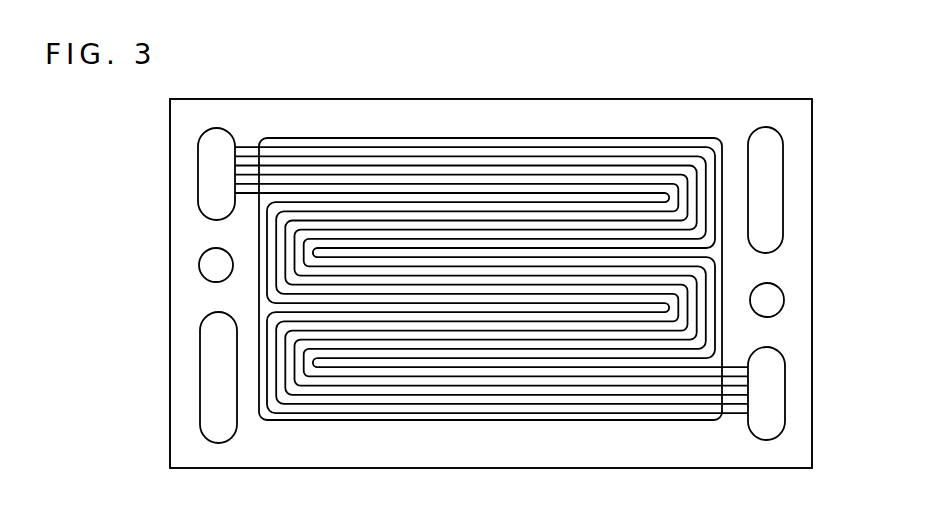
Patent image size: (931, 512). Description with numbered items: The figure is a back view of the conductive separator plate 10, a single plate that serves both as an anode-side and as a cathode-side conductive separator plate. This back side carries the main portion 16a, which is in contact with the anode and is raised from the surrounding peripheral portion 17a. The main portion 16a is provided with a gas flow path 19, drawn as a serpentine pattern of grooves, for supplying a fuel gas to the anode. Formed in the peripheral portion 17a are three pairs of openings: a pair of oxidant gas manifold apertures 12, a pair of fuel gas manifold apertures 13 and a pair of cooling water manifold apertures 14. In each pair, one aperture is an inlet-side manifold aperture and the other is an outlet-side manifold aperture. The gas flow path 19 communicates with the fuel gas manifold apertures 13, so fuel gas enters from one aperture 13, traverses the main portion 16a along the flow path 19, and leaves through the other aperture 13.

The separator plate 10 is at (437, 95).
The oxidant gas manifold apertures 12 is at (767, 167).
The fuel gas manifold apertures 13 is at (218, 158).
The cooling water manifold apertures 14 is at (216, 265).
The main portion 16a is at (565, 146).
The peripheral portion 17a is at (647, 118).
The gas flow path 19 is at (330, 152).